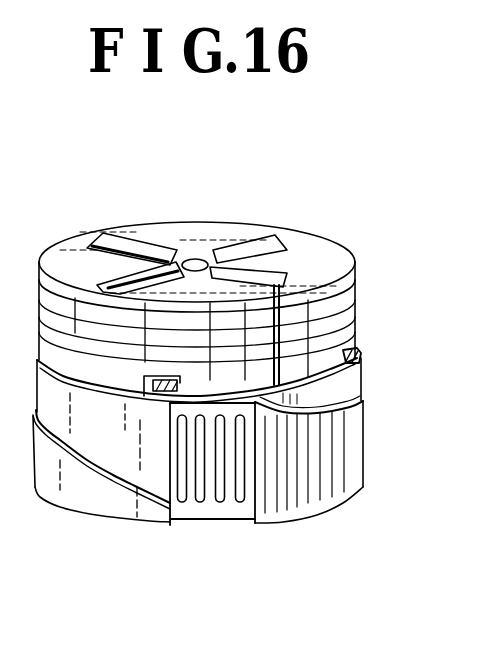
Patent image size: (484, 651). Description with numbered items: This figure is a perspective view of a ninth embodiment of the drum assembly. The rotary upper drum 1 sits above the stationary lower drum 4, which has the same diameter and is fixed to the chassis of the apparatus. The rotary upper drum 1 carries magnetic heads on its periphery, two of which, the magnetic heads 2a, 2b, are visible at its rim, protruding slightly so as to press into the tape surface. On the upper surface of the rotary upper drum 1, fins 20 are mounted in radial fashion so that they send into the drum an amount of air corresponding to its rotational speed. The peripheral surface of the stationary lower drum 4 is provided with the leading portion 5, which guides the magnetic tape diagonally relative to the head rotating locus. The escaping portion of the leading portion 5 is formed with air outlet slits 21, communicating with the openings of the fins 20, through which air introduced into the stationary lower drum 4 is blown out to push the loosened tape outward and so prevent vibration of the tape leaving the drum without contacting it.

The rotary upper drum 1 is at (324, 255).
The fins 20 is at (262, 243).
The magnetic head 2a is at (159, 393).
The magnetic head 2b is at (361, 353).
The stationary lower drum 4 is at (342, 388).
The leading portion 5 is at (343, 463).
The air outlet slits 21 is at (240, 503).